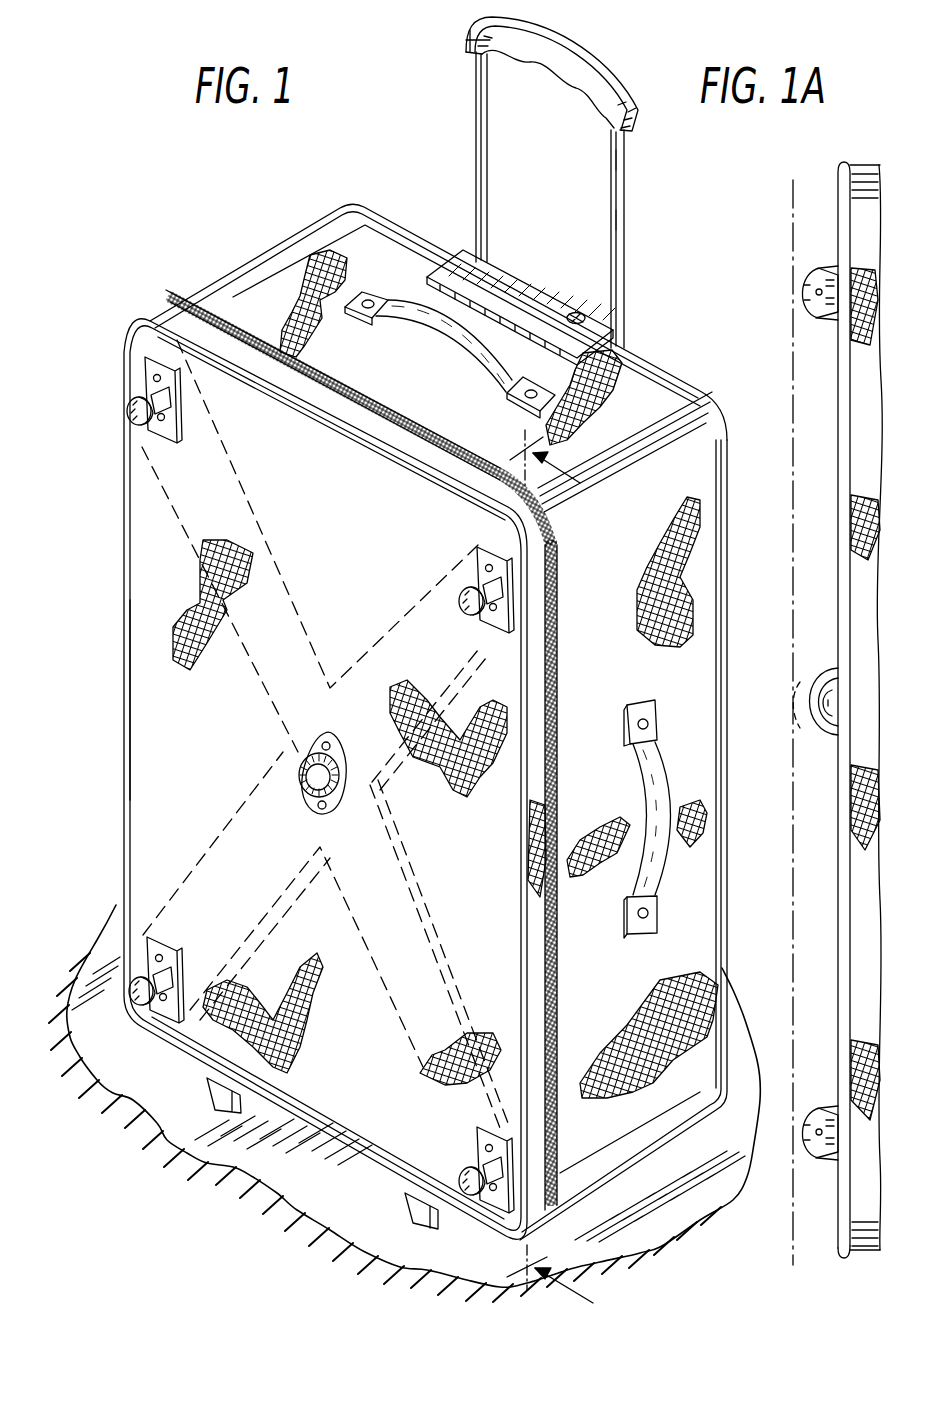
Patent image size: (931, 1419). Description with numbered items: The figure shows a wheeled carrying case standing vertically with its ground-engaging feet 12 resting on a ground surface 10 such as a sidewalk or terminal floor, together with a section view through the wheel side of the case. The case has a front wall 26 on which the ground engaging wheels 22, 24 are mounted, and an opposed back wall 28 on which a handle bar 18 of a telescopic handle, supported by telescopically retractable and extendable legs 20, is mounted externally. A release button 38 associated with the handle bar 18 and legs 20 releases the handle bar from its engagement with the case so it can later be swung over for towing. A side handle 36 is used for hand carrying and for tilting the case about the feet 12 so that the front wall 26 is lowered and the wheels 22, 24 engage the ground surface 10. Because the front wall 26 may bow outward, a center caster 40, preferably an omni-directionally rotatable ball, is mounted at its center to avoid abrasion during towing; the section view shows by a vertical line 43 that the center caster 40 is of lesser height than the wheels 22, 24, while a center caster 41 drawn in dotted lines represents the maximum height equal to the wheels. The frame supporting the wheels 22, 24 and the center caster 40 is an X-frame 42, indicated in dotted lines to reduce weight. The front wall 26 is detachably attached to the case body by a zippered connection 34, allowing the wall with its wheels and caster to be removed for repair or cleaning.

In FIG. 1, the ground surface 10 is at (660, 1217).
In FIG. 1, the ground-engaging feet 12 is at (395, 1196).
In FIG. 1, the handle bar 18 is at (602, 62).
In FIG. 1, the telescopic legs 20 is at (488, 186).
In FIG. 1, the ground engaging wheel 22 is at (173, 948).
In FIG. 1A, the ground engaging wheel 22 is at (838, 1106).
In FIG. 1, the ground engaging wheel 24 is at (175, 439).
In FIG. 1A, the ground engaging wheel 24 is at (828, 268).
In FIG. 1, the front wall 26 is at (158, 698).
In FIG. 1, the back wall 28 is at (651, 364).
In FIG. 1, the zippered connection 34 is at (557, 782).
In FIG. 1, the side handle 36 is at (413, 330).
In FIG. 1, the release button 38 is at (512, 295).
In FIG. 1, the center caster 40 is at (302, 770).
In FIG. 1A, the center caster 40 is at (826, 736).
In FIG. 1A, the center caster (maximum height) 41 is at (800, 680).
In FIG. 1, the X-frame 42 is at (408, 950).
In FIG. 1A, the vertical line 43 is at (793, 834).